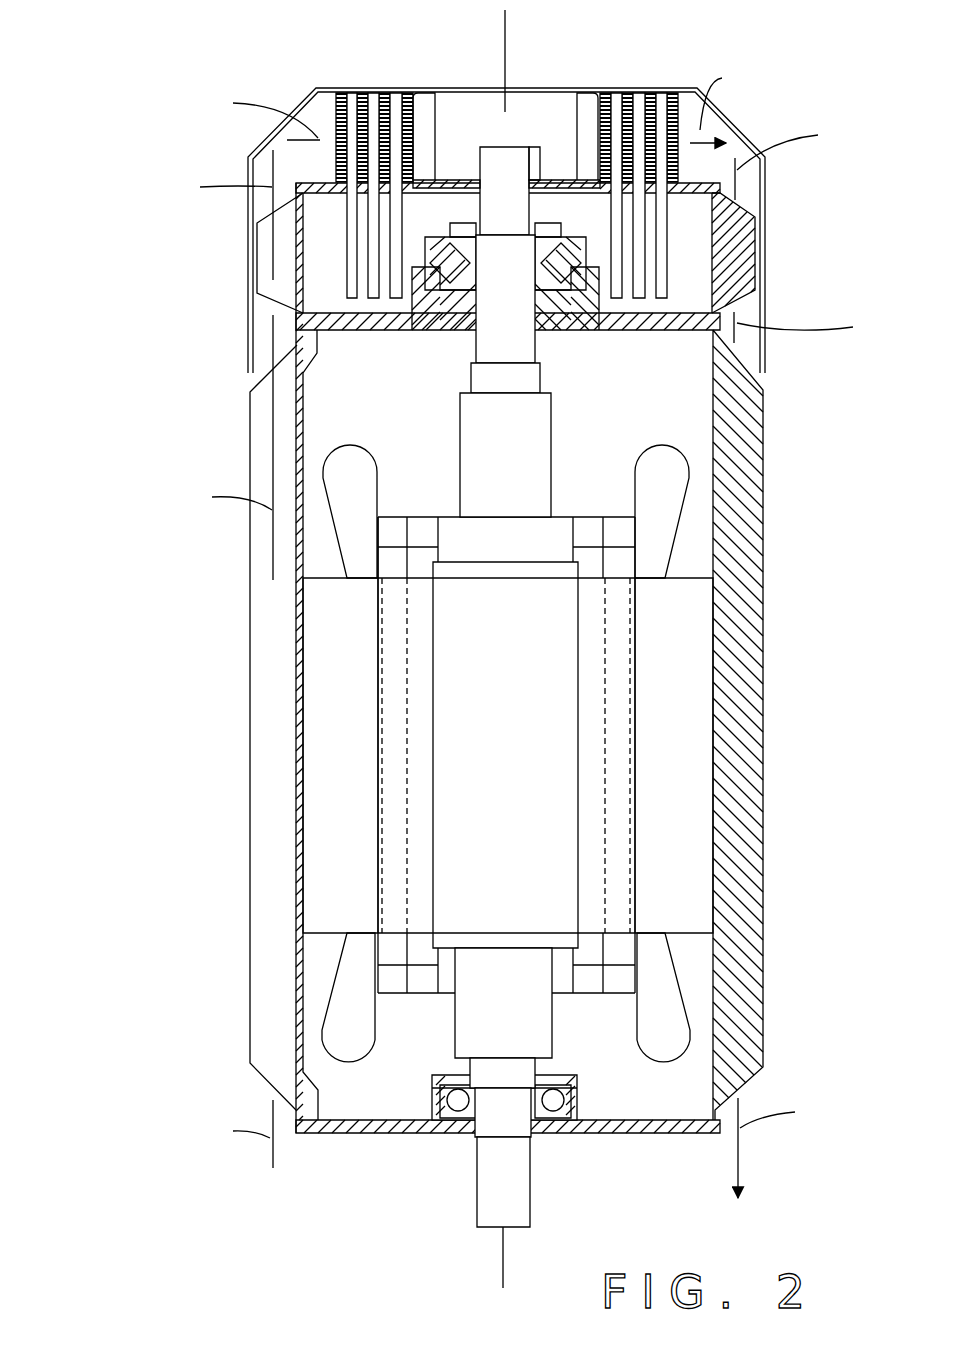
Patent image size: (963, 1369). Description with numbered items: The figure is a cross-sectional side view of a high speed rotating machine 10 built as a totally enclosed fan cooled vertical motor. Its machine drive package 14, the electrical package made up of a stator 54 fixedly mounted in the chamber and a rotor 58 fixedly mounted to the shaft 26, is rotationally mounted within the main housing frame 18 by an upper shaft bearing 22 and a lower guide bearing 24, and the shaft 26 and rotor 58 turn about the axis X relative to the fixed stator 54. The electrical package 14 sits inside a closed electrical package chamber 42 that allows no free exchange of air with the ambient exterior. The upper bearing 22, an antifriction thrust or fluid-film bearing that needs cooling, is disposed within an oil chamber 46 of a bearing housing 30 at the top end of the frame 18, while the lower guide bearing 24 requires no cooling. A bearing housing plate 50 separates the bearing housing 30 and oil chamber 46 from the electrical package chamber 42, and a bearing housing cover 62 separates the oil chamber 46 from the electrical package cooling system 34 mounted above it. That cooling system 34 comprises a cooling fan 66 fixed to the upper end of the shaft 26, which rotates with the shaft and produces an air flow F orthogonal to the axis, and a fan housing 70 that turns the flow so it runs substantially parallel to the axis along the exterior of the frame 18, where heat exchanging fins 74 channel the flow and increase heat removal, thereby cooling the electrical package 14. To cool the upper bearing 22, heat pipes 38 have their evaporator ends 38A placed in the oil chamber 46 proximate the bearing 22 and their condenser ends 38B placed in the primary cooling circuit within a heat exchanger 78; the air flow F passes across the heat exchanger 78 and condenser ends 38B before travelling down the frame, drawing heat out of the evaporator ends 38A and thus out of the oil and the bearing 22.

The high speed rotating machine 10 is at (120, 128).
The machine drive package 14 is at (490, 714).
The main housing frame 18 is at (300, 658).
The upper shaft bearing 22 is at (563, 272).
The lower guide bearing 24 is at (553, 1112).
The shaft 26 is at (498, 200).
The bearing housing 30 is at (752, 212).
The electrical package cooling system 34 is at (742, 98).
The heat pipes 38 is at (519, 196).
The evaporator ends 38A is at (397, 300).
The condenser ends 38B is at (394, 93).
The electrical package chamber 42 is at (330, 423).
The oil chamber 46 is at (582, 215).
The bearing housing plate 50 is at (720, 318).
The stator 54 is at (690, 687).
The rotor 58 is at (598, 823).
The bearing housing cover 62 is at (704, 184).
The cooling fan 66 is at (590, 118).
The fan housing 70 is at (270, 147).
The heat exchanging fins 74 is at (735, 512).
The heat exchanger 78 is at (325, 100).